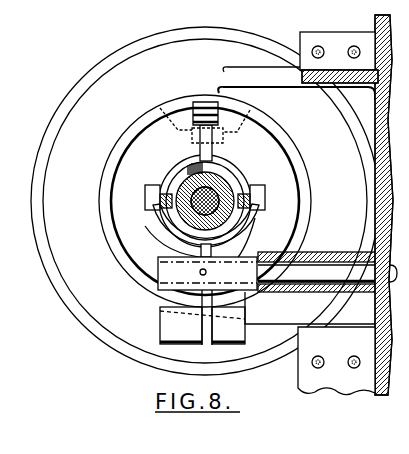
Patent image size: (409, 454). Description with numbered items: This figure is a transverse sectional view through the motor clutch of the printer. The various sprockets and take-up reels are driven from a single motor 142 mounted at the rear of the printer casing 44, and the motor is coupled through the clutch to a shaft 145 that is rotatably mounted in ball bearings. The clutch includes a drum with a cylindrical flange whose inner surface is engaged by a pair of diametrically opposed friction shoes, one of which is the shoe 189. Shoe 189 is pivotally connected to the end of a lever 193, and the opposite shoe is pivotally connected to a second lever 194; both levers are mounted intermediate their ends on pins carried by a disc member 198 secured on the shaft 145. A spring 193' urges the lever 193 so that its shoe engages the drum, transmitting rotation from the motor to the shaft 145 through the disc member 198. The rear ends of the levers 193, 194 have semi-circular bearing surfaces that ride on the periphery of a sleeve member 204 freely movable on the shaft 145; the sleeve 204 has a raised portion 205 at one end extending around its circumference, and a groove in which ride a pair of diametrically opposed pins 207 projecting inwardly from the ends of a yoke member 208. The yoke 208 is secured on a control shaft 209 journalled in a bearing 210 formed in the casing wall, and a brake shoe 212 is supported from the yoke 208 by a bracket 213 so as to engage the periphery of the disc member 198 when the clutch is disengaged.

The printer casing 44 is at (379, 158).
The motor 142 is at (108, 319).
The shaft 145 is at (221, 180).
The friction shoe 189 is at (259, 107).
The lever 193 is at (206, 134).
The spring 193' is at (233, 122).
The lever 194 is at (163, 253).
The disc member 198 is at (153, 106).
The sleeve member 204 is at (204, 182).
The raised portion 205 is at (181, 158).
The pins 207 is at (158, 186).
The yoke member 208 is at (260, 231).
The control shaft 209 is at (311, 258).
The bearing 210 is at (311, 293).
The brake shoe 212 is at (165, 312).
The bracket 213 is at (193, 297).